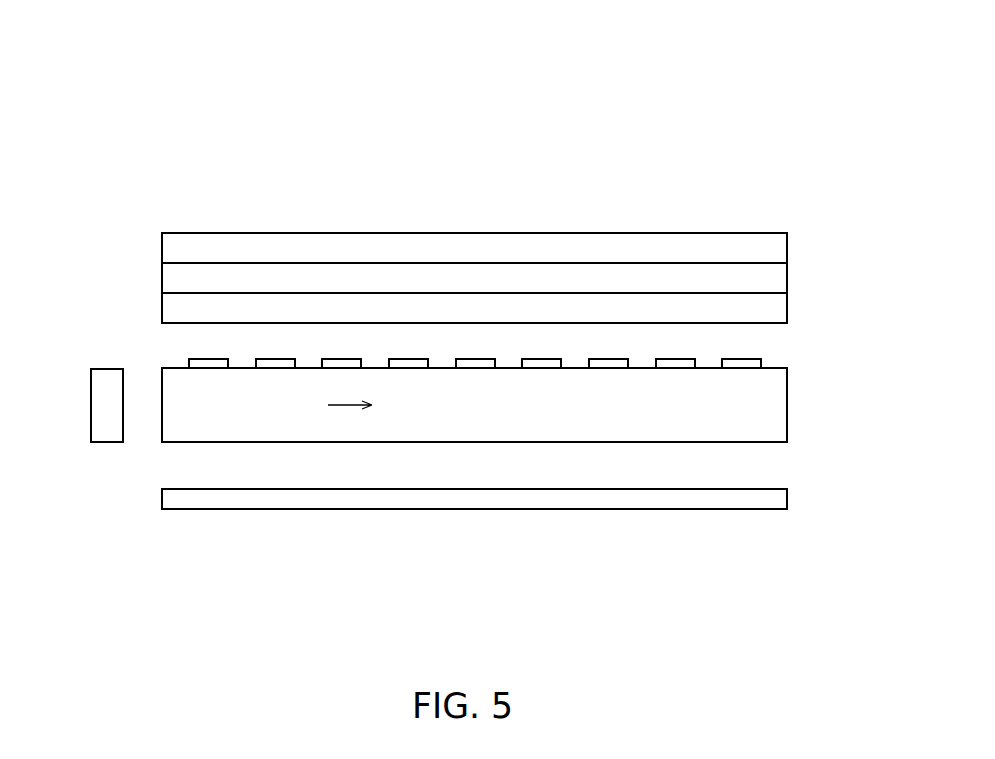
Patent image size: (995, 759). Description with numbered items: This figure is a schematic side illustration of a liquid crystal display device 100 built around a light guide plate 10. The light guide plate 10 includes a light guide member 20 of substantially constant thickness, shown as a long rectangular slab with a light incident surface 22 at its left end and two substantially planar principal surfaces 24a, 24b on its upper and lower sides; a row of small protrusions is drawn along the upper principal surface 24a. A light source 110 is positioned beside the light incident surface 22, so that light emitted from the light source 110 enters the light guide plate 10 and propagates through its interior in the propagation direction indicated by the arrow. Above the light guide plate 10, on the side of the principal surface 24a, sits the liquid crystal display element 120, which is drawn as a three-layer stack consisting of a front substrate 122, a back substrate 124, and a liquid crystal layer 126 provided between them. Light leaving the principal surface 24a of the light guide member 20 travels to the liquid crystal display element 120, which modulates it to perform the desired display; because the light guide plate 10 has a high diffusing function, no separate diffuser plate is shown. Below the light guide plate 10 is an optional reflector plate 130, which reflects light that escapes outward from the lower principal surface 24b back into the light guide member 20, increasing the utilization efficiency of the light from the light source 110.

The liquid crystal display device 100 is at (628, 88).
The liquid crystal display element 120 is at (670, 210).
The front substrate 122 is at (162, 247).
The liquid crystal layer 126 is at (162, 278).
The back substrate 124 is at (162, 307).
The light guide plate 10 is at (160, 364).
The light guide member 20 is at (787, 392).
The light incident surface 22 is at (162, 430).
The principal surface 24a is at (778, 368).
The principal surface 24b is at (787, 442).
The light source 110 is at (91, 430).
The reflector plate 130 is at (787, 497).